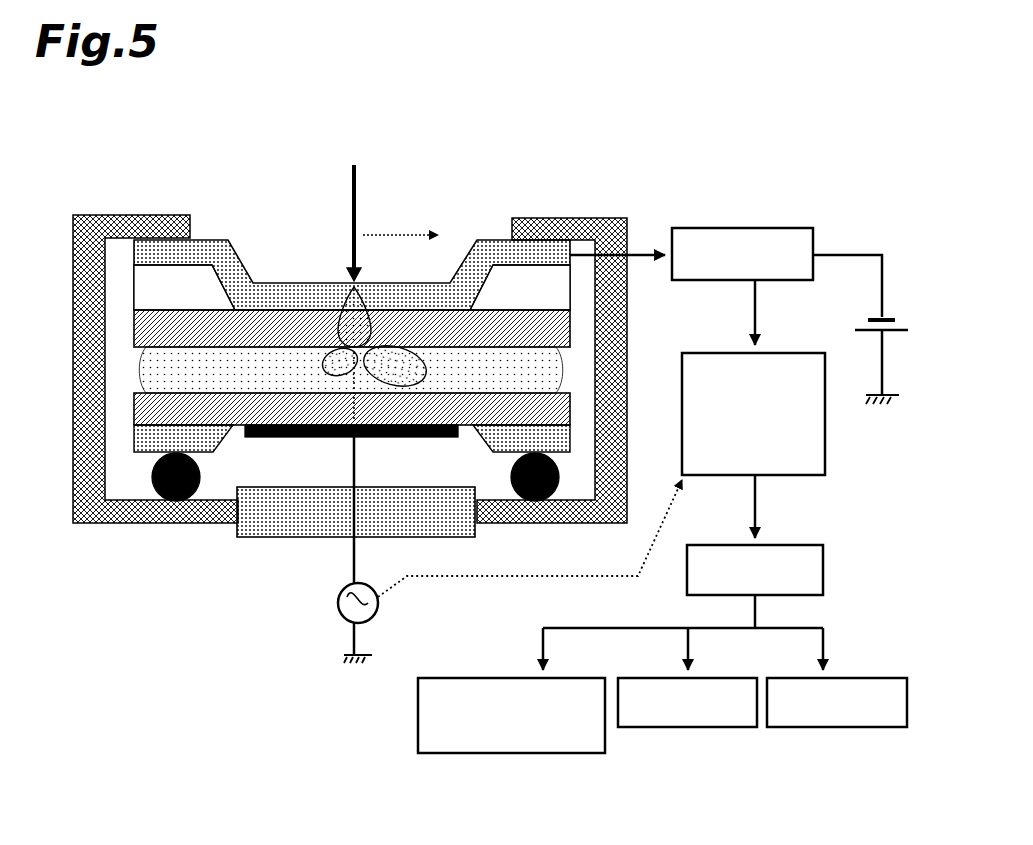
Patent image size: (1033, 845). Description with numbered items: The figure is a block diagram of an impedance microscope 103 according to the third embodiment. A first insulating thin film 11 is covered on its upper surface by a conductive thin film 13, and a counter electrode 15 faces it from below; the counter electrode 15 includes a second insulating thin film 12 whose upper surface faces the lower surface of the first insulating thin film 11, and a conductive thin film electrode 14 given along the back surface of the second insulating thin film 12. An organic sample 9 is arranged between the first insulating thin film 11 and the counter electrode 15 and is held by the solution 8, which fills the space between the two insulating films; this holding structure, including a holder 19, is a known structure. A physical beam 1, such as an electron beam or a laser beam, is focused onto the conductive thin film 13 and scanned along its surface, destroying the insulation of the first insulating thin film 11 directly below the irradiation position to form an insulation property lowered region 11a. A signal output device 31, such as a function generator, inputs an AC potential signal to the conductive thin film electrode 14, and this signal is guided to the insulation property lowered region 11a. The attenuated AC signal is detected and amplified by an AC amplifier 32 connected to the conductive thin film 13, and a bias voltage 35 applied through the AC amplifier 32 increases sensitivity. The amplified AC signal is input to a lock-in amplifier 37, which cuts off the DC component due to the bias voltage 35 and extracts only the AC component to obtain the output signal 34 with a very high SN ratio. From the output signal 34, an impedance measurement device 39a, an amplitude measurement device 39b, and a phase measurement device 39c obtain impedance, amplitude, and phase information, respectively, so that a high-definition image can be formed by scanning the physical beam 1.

The physical beam 1 is at (353, 230).
The solution 8 is at (144, 374).
The organic sample 9 is at (430, 372).
The first insulating thin film 11 is at (133, 330).
The insulation property lowered region 11a is at (388, 319).
The second insulating thin film 12 is at (133, 407).
The conductive thin film 13 is at (277, 282).
The conductive thin film electrode 14 is at (232, 445).
The counter electrode 15 is at (257, 437).
The holder 19 is at (107, 213).
The signal output device 31 is at (338, 604).
The AC amplifier 32 is at (691, 254).
The output signal 34 is at (755, 535).
The bias voltage 35 is at (897, 335).
The lock-in amplifier 37 is at (753, 377).
The impedance measurement device 39a is at (511, 715).
The amplitude measurement device 39b is at (687, 702).
The phase measurement device 39c is at (837, 702).
The impedance microscope 103 is at (672, 206).